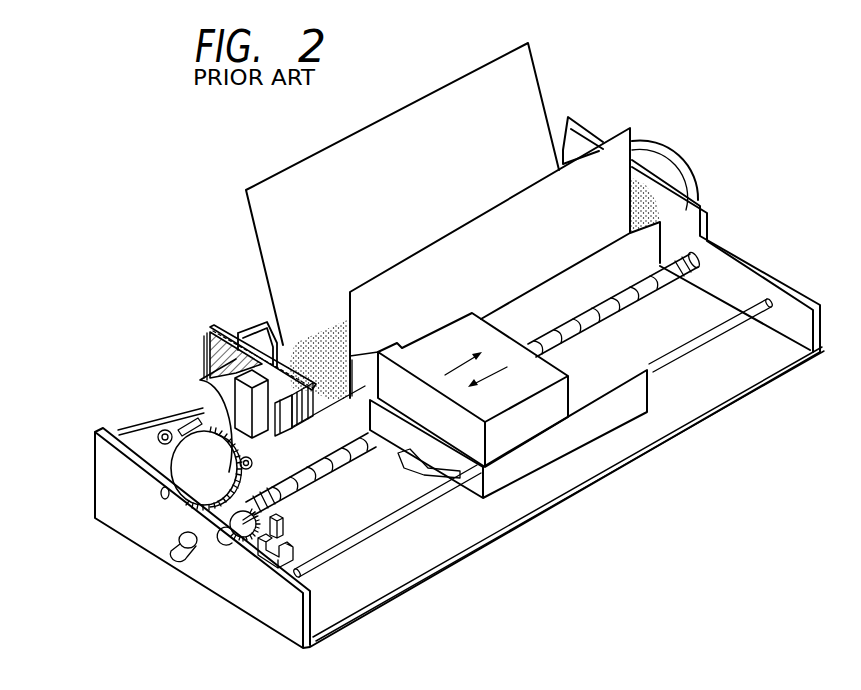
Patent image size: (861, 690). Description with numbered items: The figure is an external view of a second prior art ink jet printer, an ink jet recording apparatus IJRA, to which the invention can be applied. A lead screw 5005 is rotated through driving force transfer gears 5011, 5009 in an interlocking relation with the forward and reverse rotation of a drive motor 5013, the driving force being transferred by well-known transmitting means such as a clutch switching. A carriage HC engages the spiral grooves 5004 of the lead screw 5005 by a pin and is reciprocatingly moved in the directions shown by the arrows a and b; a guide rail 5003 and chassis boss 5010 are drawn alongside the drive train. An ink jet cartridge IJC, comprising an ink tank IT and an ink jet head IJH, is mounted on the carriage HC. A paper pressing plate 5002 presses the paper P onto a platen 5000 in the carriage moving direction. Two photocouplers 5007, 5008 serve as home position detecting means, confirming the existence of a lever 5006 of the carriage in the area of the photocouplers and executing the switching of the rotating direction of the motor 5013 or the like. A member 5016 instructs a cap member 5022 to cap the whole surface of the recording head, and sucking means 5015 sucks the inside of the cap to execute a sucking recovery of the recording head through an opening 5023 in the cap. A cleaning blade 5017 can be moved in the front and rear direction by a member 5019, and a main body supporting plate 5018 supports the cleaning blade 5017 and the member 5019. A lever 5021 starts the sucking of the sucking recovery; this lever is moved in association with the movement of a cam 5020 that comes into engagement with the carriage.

The recording paper P is at (536, 77).
The ink jet recording apparatus IJRA is at (598, 125).
The platen 5000 is at (650, 207).
The paper pressing plate 5002 is at (573, 273).
The ink jet cartridge IJC is at (548, 362).
The ink tank IT is at (503, 333).
The ink jet head IJH is at (380, 352).
The carriage HC is at (576, 428).
The guide rail 5003 is at (432, 491).
The spiral grooves 5004 is at (366, 437).
The lead screw 5005 is at (392, 503).
The lever of the carriage 5006 is at (425, 490).
The photocoupler 5007 is at (288, 548).
The photocoupler 5008 is at (277, 560).
The driving force transfer gear 5009 is at (188, 577).
The chassis boss 5010 is at (205, 498).
The driving force transfer gear 5011 is at (173, 463).
The drive motor 5013 is at (206, 385).
The sucking means 5015 is at (248, 334).
The member to instruct the cap member 5016 is at (287, 343).
The cleaning blade 5017 is at (303, 347).
The main body supporting plate 5018 is at (217, 322).
The member 5019 is at (207, 345).
The cam 5020 is at (223, 540).
The lever 5021 is at (197, 417).
The cap member 5022 is at (343, 362).
The opening 5023 is at (303, 424).